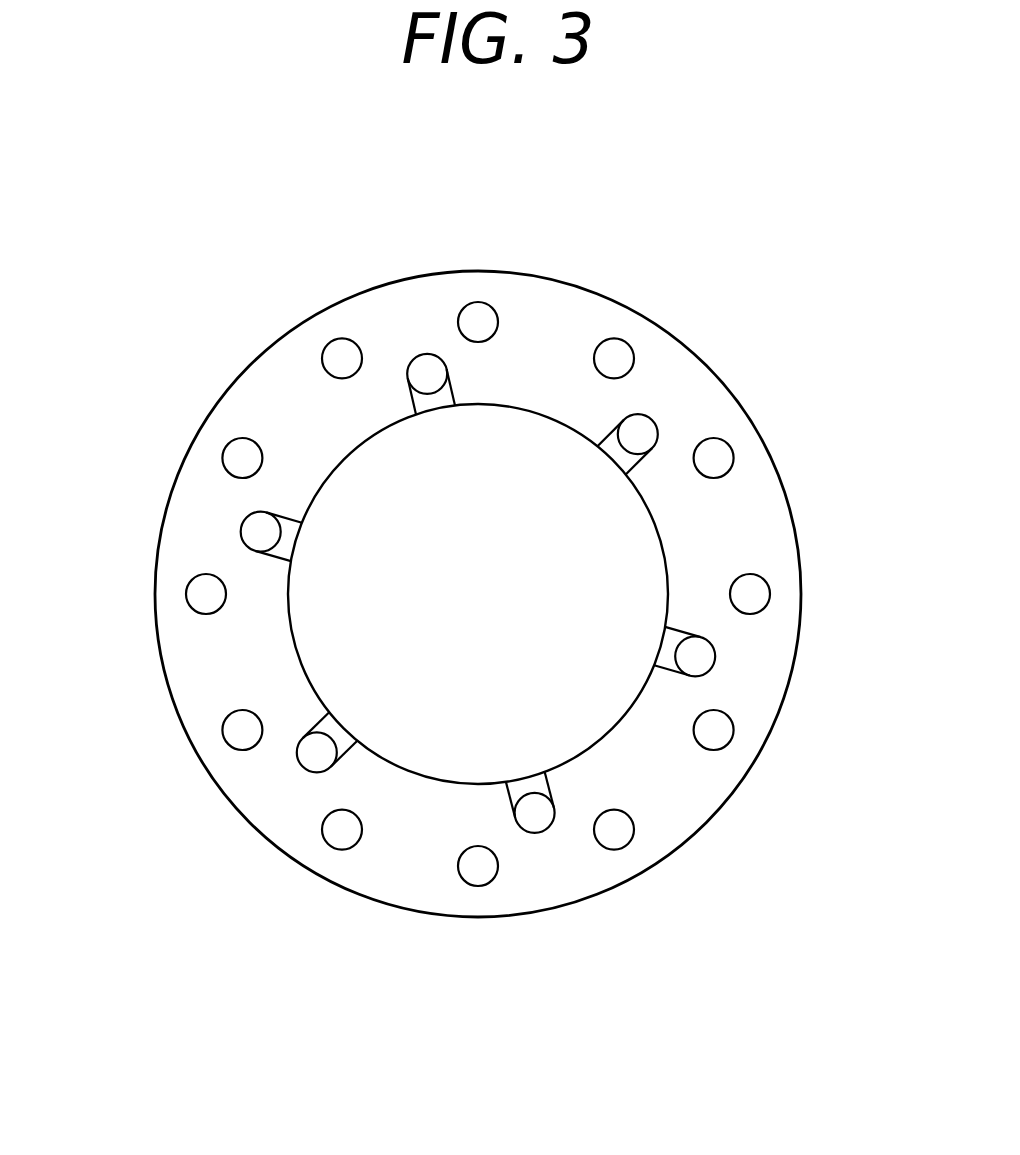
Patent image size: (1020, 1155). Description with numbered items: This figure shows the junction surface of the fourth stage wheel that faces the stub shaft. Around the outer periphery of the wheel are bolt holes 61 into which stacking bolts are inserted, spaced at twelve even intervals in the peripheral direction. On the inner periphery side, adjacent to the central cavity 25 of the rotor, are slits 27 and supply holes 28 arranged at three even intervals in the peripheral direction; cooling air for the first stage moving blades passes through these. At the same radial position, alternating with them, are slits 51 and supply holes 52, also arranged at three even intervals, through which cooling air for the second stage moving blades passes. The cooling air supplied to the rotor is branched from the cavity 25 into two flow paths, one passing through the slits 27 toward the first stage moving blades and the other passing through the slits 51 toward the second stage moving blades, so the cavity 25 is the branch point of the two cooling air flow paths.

The cavity 25 is at (438, 725).
The slits 27 is at (620, 460).
The supply holes 28 is at (643, 430).
The slits 51 is at (432, 405).
The supply holes 52 is at (433, 372).
The bolt holes 61 is at (481, 318).